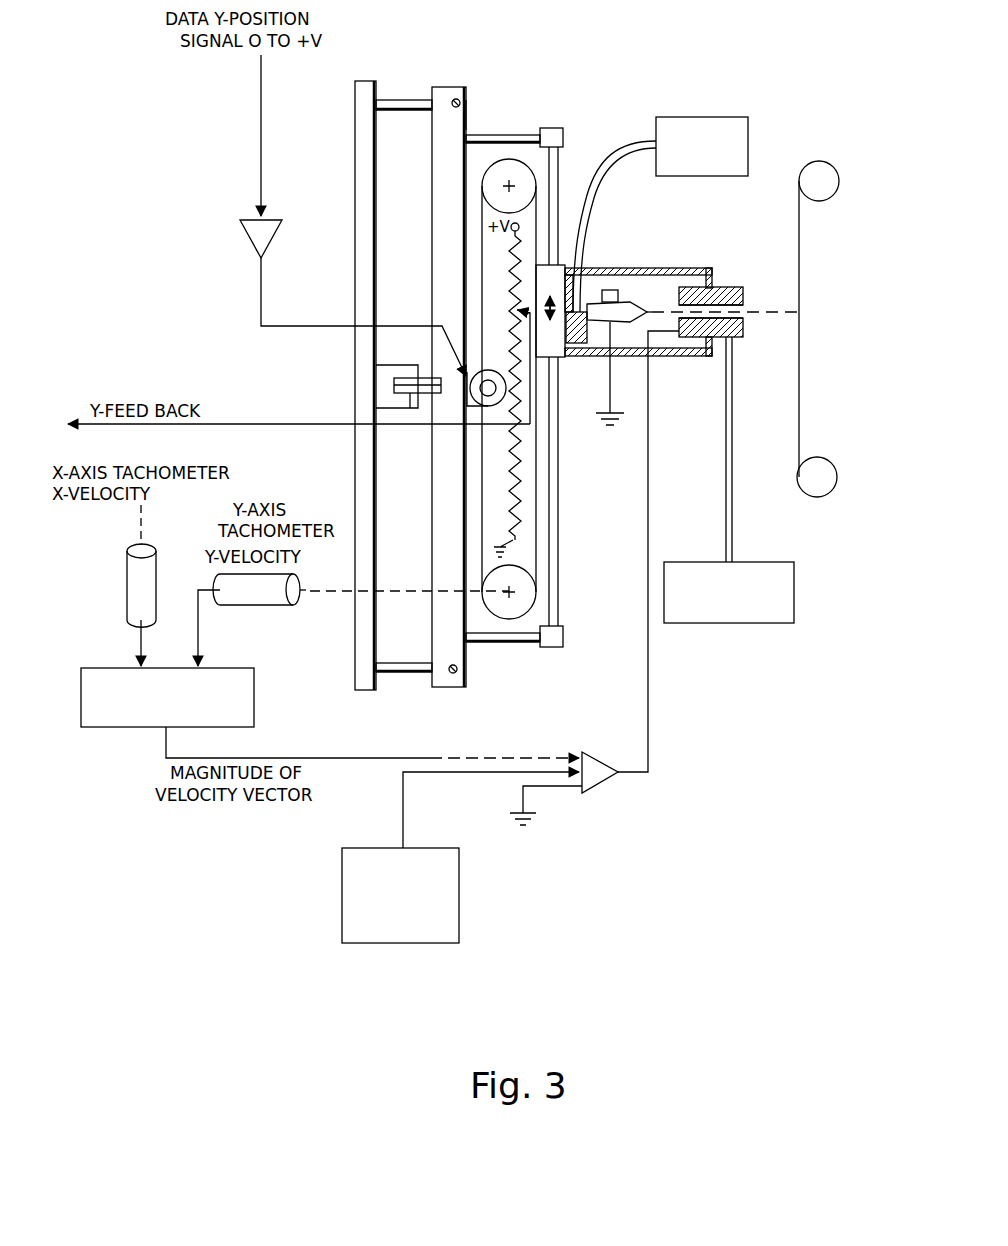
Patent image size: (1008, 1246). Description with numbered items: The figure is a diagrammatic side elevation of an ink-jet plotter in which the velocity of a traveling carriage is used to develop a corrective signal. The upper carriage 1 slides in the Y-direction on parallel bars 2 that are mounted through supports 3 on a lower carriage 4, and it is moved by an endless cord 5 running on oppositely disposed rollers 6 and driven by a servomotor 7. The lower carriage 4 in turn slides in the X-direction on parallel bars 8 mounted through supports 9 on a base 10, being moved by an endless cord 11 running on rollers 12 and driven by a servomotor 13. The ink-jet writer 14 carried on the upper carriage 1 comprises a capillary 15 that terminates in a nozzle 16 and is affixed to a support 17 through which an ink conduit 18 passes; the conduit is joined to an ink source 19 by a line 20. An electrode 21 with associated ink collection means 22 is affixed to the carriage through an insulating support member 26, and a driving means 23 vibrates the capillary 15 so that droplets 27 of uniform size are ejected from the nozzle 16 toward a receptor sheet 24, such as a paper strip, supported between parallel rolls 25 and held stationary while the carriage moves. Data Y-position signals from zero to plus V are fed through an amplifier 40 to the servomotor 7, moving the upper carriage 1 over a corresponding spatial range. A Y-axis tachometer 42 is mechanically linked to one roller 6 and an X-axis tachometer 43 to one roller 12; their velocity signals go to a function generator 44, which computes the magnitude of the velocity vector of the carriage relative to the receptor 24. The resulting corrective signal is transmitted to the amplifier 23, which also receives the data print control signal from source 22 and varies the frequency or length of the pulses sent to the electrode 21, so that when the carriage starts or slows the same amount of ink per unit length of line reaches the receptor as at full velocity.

The upper carriage 1 is at (553, 282).
The parallel bars 2 is at (556, 166).
The supports 3 is at (530, 135).
The lower carriage 4 is at (458, 126).
The endless cord 5 is at (483, 210).
The rollers 6 is at (510, 178).
The servomotor 7 is at (500, 392).
The parallel bars 8 is at (457, 99).
The supports 9 is at (400, 100).
The base 10 is at (360, 146).
The endless cord 11 is at (408, 394).
The rollers 12 is at (410, 382).
The servomotor 13 is at (381, 392).
The ink-jet writer 14 is at (599, 282).
The capillary 15 is at (626, 305).
The nozzle 16 is at (645, 308).
The support 17 is at (578, 344).
The ink conduit 18 is at (580, 283).
The ink source 19 is at (740, 135).
The line 20 is at (600, 190).
The electrode 21 is at (700, 332).
The ink collection means 22 is at (785, 582).
The amplifier 23 is at (596, 779).
The receptor sheet 24 is at (798, 240).
The parallel rolls 25 is at (823, 172).
The insulating support member 26 is at (625, 356).
The droplets 27 is at (775, 309).
The amplifier 40 is at (252, 233).
The Y-axis tachometer 42 is at (255, 594).
The X-axis tachometer 43 is at (135, 580).
The function generator 44 is at (240, 697).